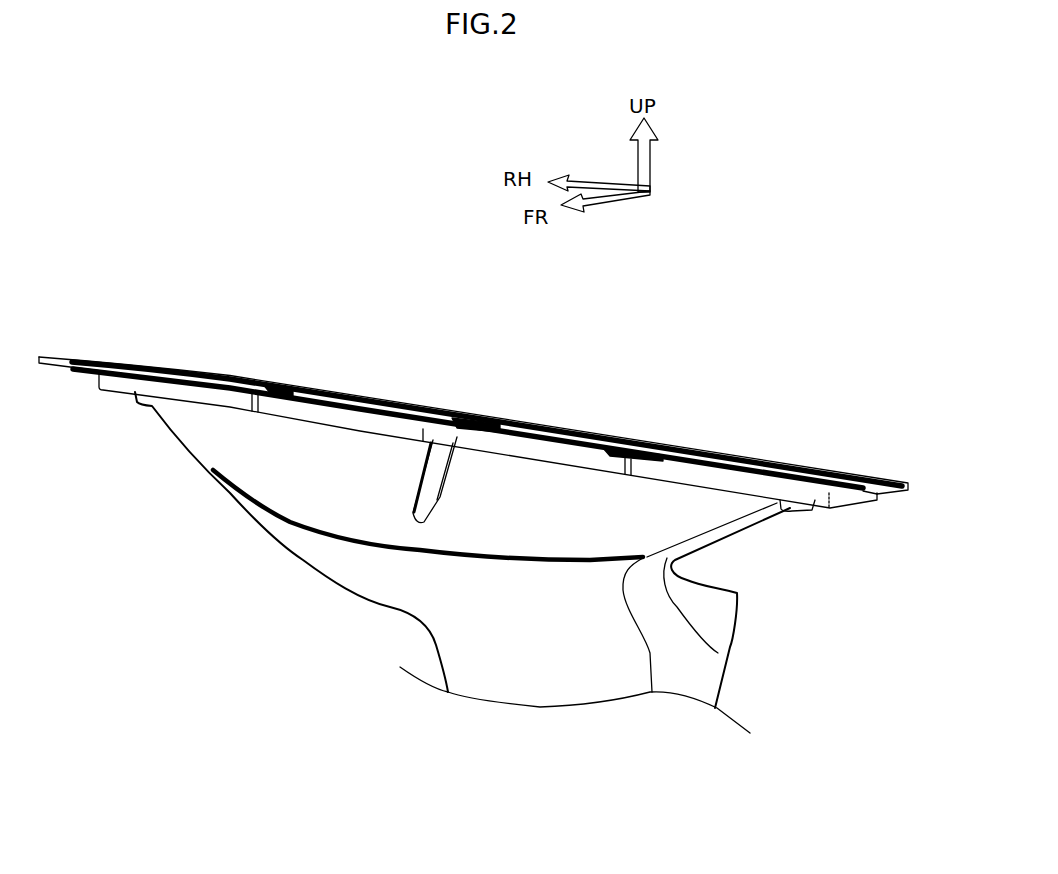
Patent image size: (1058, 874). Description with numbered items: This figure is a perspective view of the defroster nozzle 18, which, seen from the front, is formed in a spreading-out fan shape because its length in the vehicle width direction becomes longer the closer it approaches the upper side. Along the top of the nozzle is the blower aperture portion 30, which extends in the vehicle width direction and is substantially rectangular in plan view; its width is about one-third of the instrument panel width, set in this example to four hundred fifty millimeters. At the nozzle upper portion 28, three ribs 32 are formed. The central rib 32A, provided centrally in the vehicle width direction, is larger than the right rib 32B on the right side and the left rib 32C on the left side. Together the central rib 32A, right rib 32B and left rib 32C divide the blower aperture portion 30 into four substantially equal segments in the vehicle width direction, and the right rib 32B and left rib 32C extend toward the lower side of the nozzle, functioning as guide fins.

The defroster nozzle 18 is at (195, 366).
The nozzle upper portion 28 is at (192, 457).
The blower aperture portion 30 is at (760, 468).
The ribs 32 is at (660, 367).
The central rib 32A is at (483, 412).
The right rib 32B is at (283, 377).
The left rib 32C is at (657, 450).